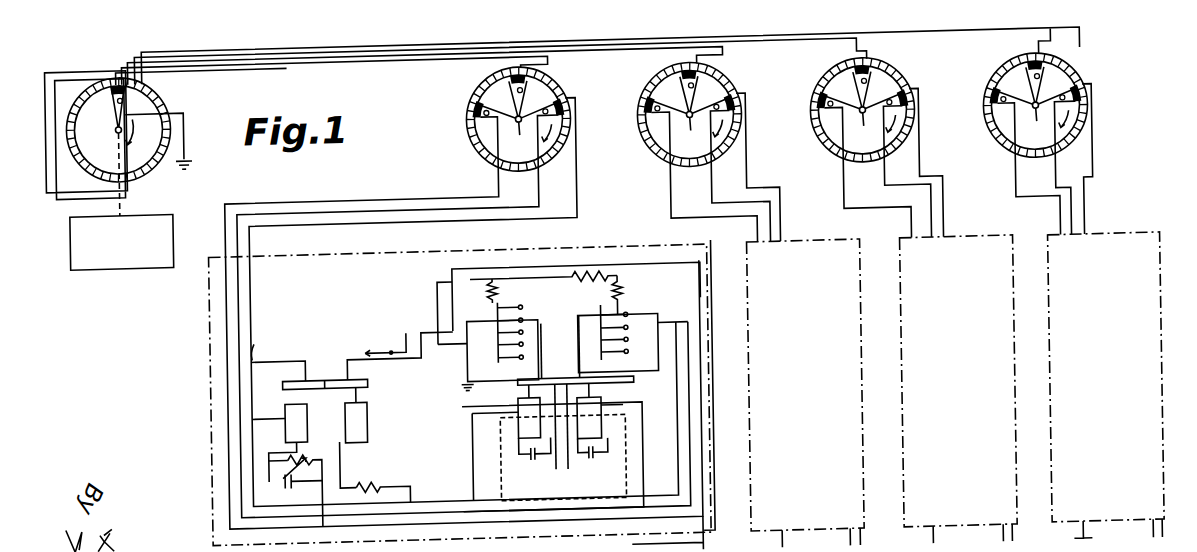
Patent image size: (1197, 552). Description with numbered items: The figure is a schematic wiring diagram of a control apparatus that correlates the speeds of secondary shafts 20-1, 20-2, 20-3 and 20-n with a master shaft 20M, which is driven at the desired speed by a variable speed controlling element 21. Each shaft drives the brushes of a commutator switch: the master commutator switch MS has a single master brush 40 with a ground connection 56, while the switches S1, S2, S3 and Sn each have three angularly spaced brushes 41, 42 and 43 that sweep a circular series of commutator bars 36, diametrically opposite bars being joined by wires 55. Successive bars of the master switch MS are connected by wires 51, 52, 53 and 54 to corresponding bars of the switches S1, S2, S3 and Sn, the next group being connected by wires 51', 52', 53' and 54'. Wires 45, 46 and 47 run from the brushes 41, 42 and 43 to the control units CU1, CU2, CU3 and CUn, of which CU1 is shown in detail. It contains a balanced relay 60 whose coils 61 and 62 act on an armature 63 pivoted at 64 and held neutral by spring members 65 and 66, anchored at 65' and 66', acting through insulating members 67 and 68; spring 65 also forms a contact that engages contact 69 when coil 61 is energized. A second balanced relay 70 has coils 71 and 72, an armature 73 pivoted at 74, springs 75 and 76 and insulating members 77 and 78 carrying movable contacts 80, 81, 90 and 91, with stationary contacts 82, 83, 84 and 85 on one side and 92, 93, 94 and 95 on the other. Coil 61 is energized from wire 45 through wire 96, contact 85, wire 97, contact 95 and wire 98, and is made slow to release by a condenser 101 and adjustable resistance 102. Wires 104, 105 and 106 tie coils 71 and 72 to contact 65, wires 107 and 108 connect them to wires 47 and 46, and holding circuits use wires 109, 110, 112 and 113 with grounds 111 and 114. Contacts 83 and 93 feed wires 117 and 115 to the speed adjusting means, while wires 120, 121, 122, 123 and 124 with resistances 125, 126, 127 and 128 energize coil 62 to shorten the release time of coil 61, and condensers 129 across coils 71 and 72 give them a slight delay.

The master shaft 20M is at (103, 175).
The secondary shaft 20-1 is at (518, 119).
The secondary shaft 20-2 is at (689, 114).
The secondary shaft 20-3 is at (862, 110).
The secondary shaft 20-n is at (1035, 105).
The variable speed controlling element 21 is at (112, 258).
The commutator bars 36 is at (577, 129).
The master brush 40 is at (114, 96).
The brush 41 is at (576, 68).
The brush 42 is at (714, 111).
The brush 43 is at (834, 102).
The wire 45 is at (689, 295).
The wire 46 is at (643, 316).
The wire 47 is at (658, 326).
The wire 51 is at (334, 79).
The wire 52 is at (425, 74).
The wire 53 is at (500, 70).
The wire 54 is at (610, 73).
The wire 51' is at (355, 71).
The branch conductor 52' is at (743, 52).
The branch conductor 53' is at (926, 47).
The branch conductor 54' is at (1104, 44).
The wires 55 is at (56, 159).
The ground connection 56 is at (191, 133).
The master commutator switch MS is at (183, 95).
The commutator switch S1 is at (463, 98).
The commutator switch S2 is at (633, 96).
The commutator switch S3 is at (809, 83).
The commutator switch Sn is at (984, 78).
The control unit CU1 is at (203, 323).
The control unit CU2 is at (740, 395).
The control unit CU3 is at (897, 388).
The control unit CUn is at (1042, 382).
The balanced relay 60 is at (330, 345).
The actuating coil 61 is at (282, 427).
The actuating coil 62 is at (365, 418).
The balanced armature 63 is at (341, 380).
The pivot 64 is at (316, 377).
The spring member 65 is at (384, 368).
The anchor 65' is at (387, 385).
The spring member 66 is at (266, 353).
The anchor 66' is at (270, 331).
The insulating member 67 is at (346, 362).
The insulating member 68 is at (294, 362).
The relay contact 69 is at (368, 347).
The balanced relay 70 is at (560, 325).
The actuating coil 71 is at (534, 419).
The actuating coil 72 is at (600, 417).
The armature 73 is at (571, 383).
The pivot 74 is at (570, 384).
The spring member 75 is at (620, 366).
The spring member 76 is at (508, 396).
The insulating member 77 is at (576, 344).
The insulating member 78 is at (542, 358).
The movable contact 80 is at (575, 327).
The movable contact 81 is at (596, 315).
The stationary relay contact 82 is at (650, 364).
The stationary relay contact 83 is at (630, 310).
The stationary relay contact 84 is at (628, 298).
The stationary relay contact 85 is at (632, 343).
The movable contact 90 is at (548, 309).
The movable contact 91 is at (522, 330).
The stationary relay contact 92 is at (471, 392).
The stationary relay contact 93 is at (490, 323).
The stationary relay contact 94 is at (490, 304).
The stationary relay contact 95 is at (470, 352).
The wire 96 is at (373, 528).
The wire 97 is at (507, 295).
The wire 98 is at (407, 470).
The condenser 101 is at (296, 486).
The adjustable resistance 102 is at (270, 474).
The wire 104 is at (553, 468).
The wire 105 is at (565, 468).
The wire 106 is at (466, 442).
The wire 107 is at (470, 416).
The wire 108 is at (639, 488).
The wire 109 is at (625, 484).
The wire 110 is at (708, 363).
The ground 111 is at (650, 384).
The wire 112 is at (472, 438).
The wire 113 is at (450, 394).
The ground 114 is at (455, 378).
The wire 115 is at (710, 546).
The wire 117 is at (598, 544).
The wire 120 is at (651, 315).
The wire 121 is at (528, 273).
The wire 122 is at (338, 460).
The wire 123 is at (452, 335).
The wire 124 is at (505, 265).
The resistance 125 is at (362, 488).
The resistor 126 is at (490, 287).
The resistor 127 is at (590, 270).
The resistor 128 is at (622, 278).
The condenser 129 is at (556, 469).